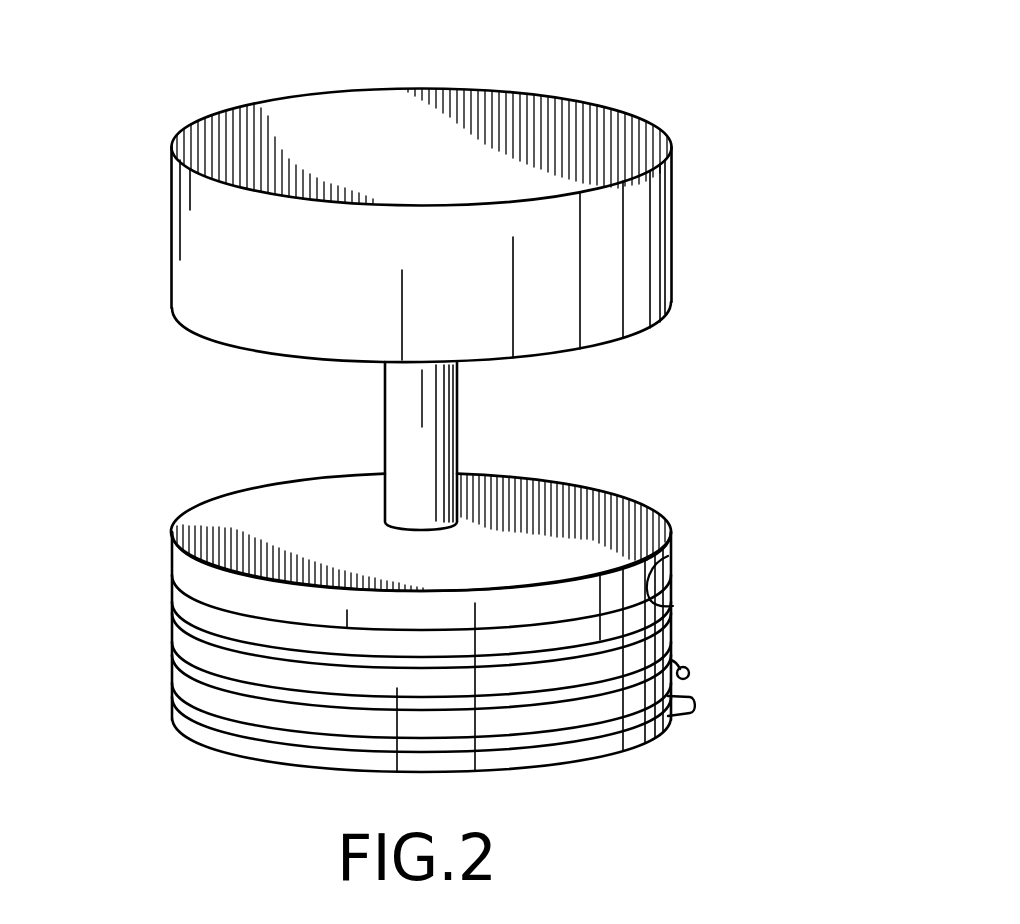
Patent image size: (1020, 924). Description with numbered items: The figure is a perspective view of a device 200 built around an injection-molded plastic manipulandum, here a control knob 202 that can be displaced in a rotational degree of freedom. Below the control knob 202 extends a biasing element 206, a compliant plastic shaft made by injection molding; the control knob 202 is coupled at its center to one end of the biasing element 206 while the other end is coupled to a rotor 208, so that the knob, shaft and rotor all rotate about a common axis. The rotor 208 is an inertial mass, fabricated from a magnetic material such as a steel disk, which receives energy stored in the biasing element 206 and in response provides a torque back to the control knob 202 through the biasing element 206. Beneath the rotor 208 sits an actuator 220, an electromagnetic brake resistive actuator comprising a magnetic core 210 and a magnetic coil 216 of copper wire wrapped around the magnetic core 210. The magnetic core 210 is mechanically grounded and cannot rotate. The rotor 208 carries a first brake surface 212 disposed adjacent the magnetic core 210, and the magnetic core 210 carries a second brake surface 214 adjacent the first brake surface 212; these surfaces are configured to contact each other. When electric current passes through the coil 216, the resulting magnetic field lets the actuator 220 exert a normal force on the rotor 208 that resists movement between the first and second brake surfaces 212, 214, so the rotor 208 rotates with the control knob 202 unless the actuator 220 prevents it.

The device 200 is at (812, 207).
The control knob 202 is at (595, 105).
The biasing element 206 is at (427, 438).
The rotor 208 is at (180, 562).
The magnetic core 210 is at (668, 635).
The first brake surface 212 is at (668, 556).
The second brake surface 214 is at (672, 607).
The magnetic coil 216 is at (690, 676).
The actuator 220 is at (145, 600).